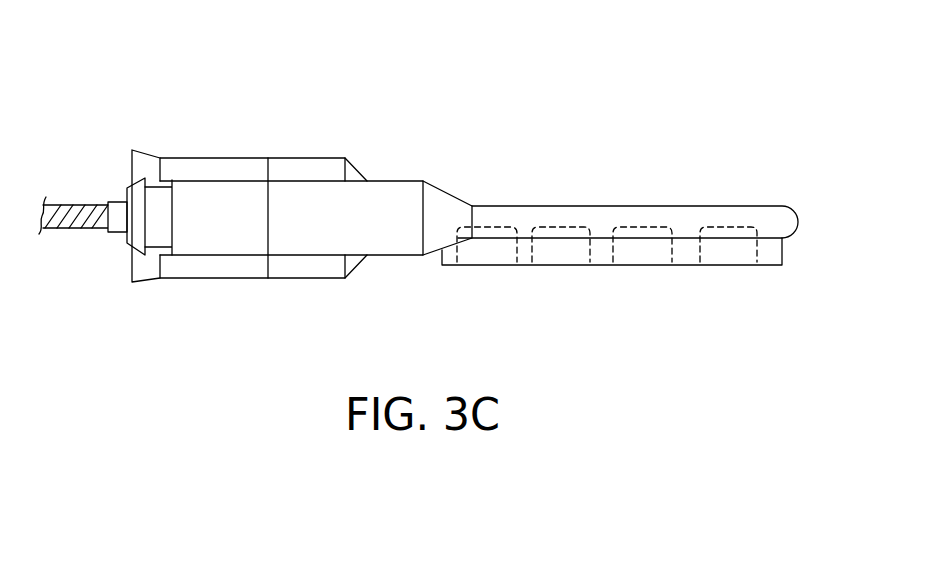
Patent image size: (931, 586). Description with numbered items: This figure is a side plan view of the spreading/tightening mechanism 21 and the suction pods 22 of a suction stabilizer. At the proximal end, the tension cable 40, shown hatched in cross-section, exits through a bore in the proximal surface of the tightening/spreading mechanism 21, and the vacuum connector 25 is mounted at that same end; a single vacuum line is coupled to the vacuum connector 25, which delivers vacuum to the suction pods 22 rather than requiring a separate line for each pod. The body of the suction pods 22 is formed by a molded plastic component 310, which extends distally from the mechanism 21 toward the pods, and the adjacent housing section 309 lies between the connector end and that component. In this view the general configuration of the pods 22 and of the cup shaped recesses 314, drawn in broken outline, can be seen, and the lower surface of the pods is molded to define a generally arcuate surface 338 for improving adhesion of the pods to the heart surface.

The tightening/spreading mechanism 21 is at (196, 106).
The suction pods 22 is at (623, 188).
The vacuum connector 25 is at (128, 240).
The tension cable 40 is at (73, 210).
The first housing section 309 is at (217, 170).
The plastic component 310 is at (314, 170).
The cup shaped recesses 314 is at (710, 266).
The arcuate surface 338 is at (773, 270).